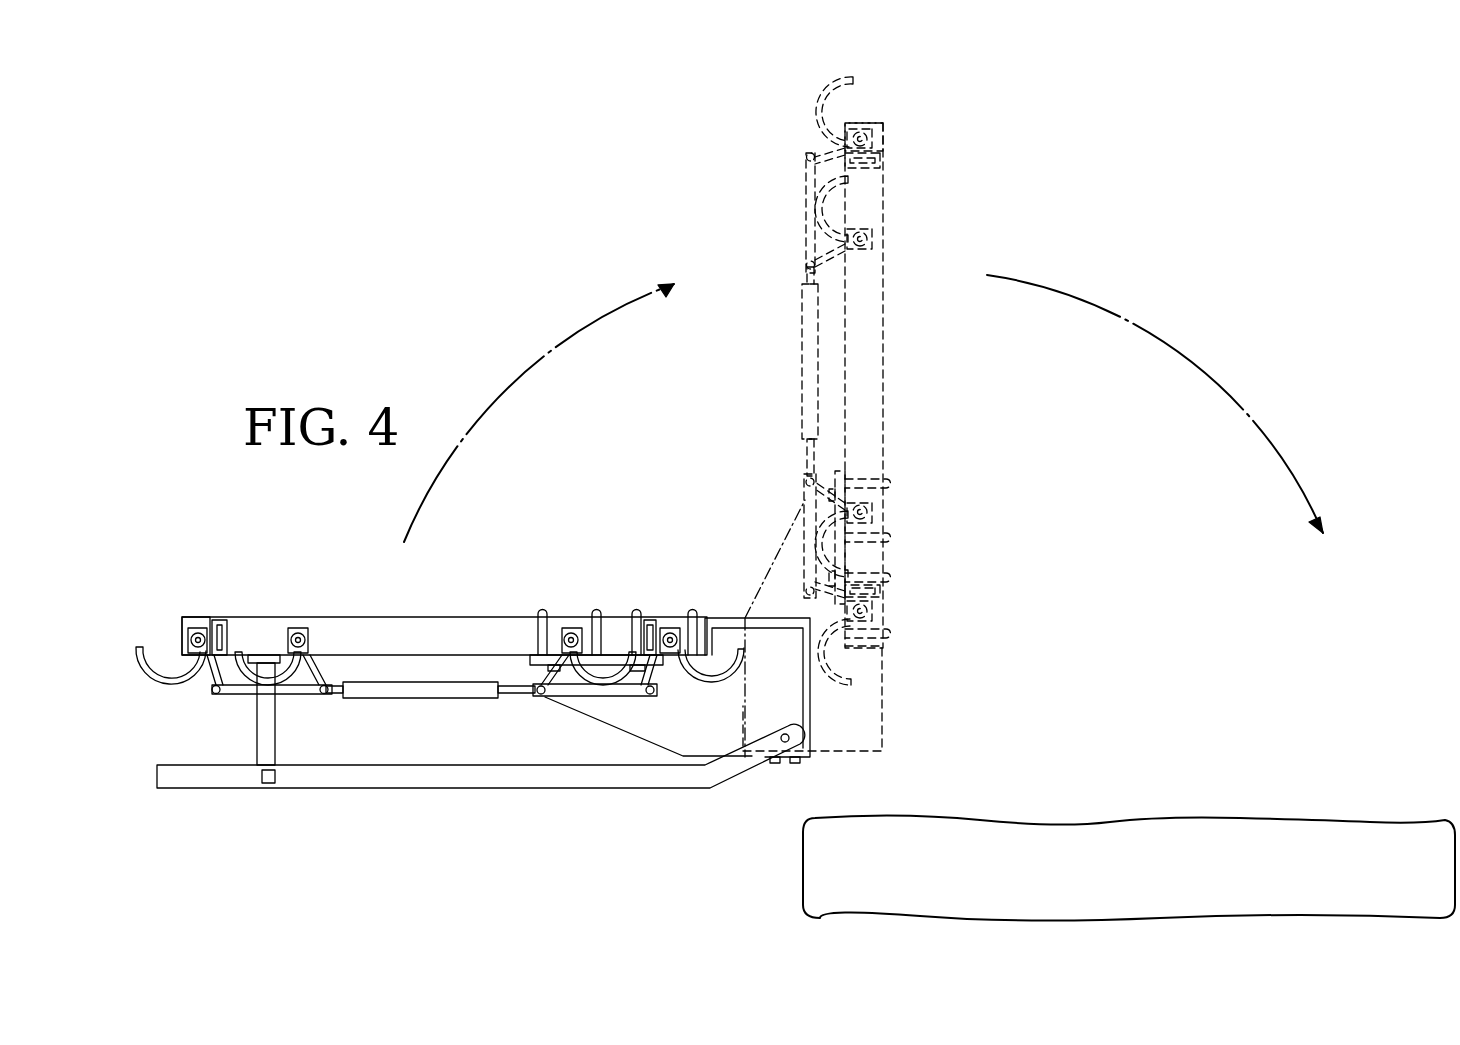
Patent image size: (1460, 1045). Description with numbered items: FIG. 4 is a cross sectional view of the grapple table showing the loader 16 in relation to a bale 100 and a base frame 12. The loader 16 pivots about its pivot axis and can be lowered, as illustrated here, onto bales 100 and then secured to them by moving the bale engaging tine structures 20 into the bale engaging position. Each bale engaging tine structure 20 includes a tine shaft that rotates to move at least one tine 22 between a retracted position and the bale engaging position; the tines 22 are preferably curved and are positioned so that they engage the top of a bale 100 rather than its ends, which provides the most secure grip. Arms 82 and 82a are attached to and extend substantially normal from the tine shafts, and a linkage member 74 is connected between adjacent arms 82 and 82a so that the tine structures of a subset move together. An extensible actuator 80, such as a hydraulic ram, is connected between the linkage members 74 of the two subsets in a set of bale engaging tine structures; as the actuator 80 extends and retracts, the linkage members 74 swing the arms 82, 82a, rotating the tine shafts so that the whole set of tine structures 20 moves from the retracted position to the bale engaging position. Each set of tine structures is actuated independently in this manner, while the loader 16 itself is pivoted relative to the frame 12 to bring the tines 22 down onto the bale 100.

The base frame 12 is at (440, 790).
The loader 16 is at (506, 598).
The bale engaging tine structure 20 is at (170, 628).
The tine 22 is at (148, 673).
The linkage member 74 is at (310, 697).
The extensible actuator 80 is at (430, 699).
The arm 82 is at (203, 678).
The arm 82a is at (318, 652).
The bale 100 is at (1105, 822).